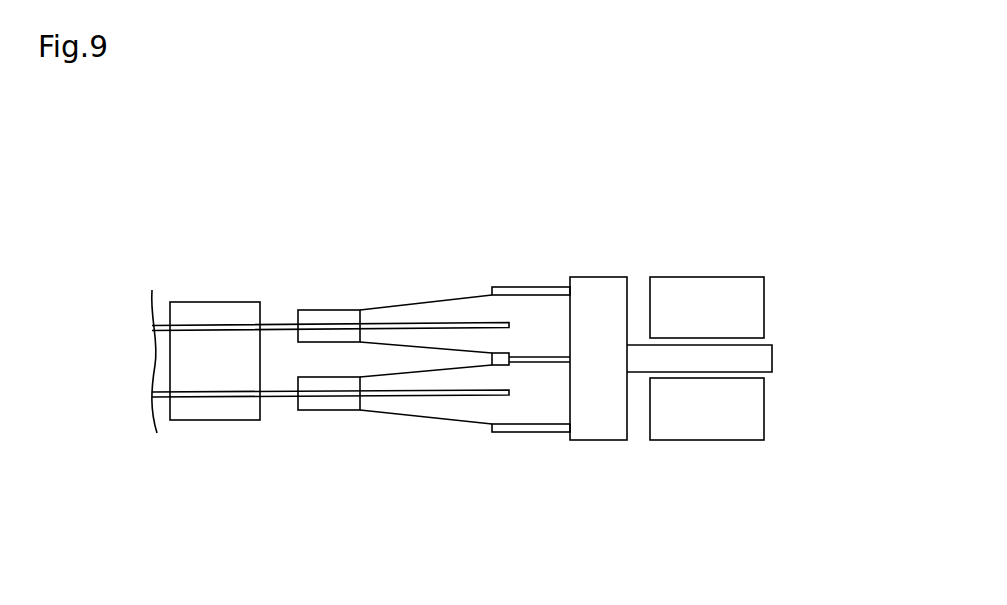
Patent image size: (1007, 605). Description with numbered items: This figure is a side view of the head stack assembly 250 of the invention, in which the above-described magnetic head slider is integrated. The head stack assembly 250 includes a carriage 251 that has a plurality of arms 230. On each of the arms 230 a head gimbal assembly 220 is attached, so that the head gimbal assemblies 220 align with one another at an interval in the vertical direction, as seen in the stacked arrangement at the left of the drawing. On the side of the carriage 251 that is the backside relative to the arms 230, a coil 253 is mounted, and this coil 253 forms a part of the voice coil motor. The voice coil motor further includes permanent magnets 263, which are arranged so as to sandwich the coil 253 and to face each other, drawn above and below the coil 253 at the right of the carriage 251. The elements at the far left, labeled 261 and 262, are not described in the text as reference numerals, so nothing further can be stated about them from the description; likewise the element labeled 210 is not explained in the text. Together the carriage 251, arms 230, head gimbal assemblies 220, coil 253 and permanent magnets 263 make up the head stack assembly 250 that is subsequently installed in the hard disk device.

The core portion 210 is at (288, 323).
The head gimbal assembly 220 is at (417, 302).
The arm 230 is at (507, 286).
The head stack assembly 250 is at (600, 247).
The carriage 251 is at (602, 433).
The coil 253 is at (760, 362).
The block 261 is at (193, 308).
The lead lines 262 is at (272, 324).
The permanent magnet 263 is at (702, 276).